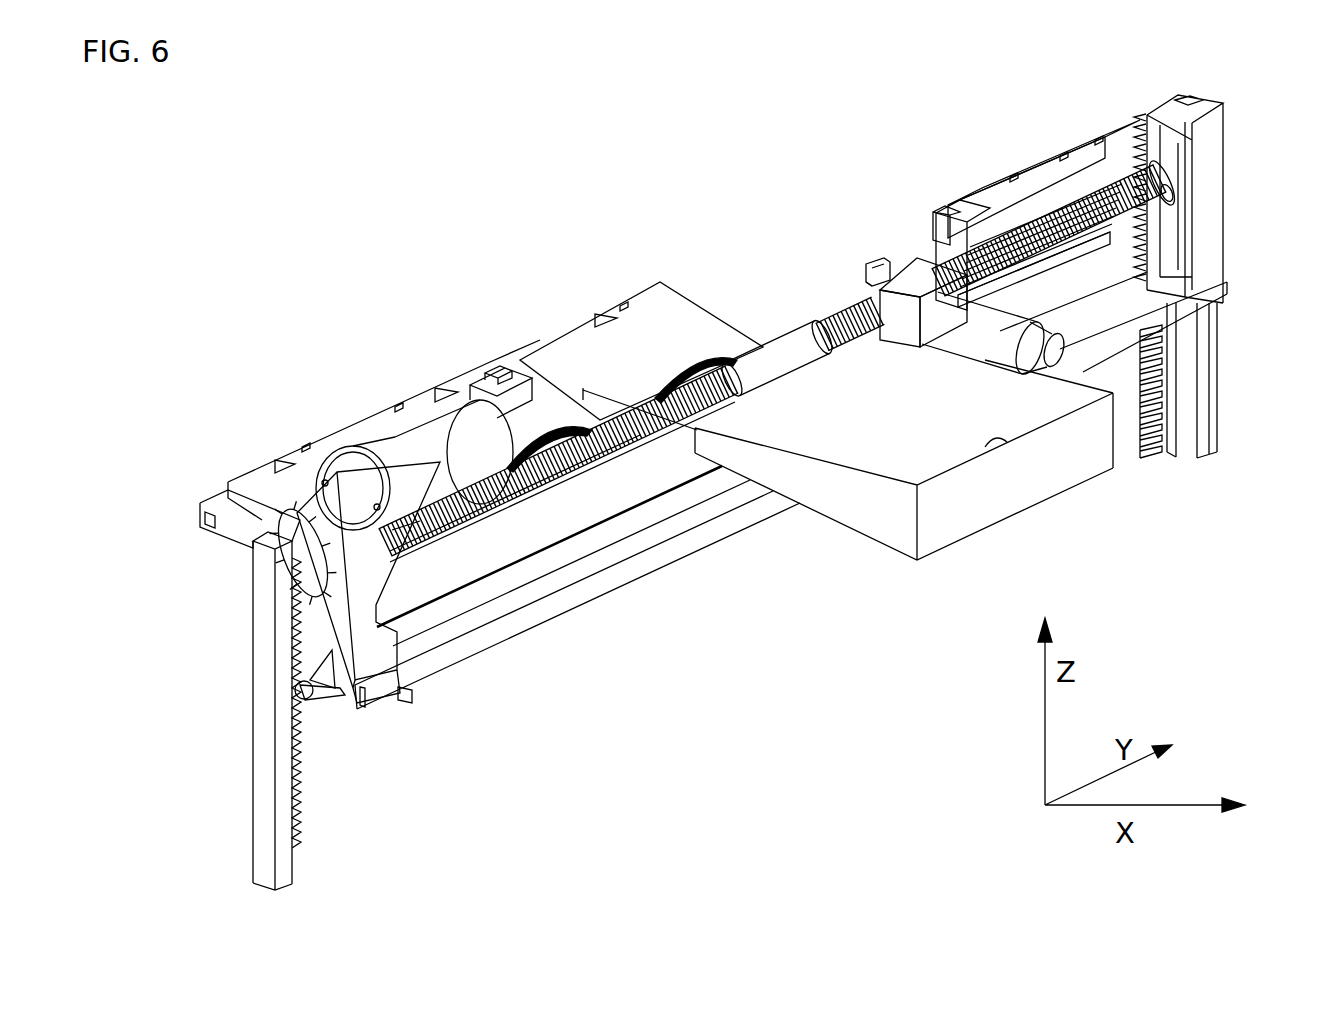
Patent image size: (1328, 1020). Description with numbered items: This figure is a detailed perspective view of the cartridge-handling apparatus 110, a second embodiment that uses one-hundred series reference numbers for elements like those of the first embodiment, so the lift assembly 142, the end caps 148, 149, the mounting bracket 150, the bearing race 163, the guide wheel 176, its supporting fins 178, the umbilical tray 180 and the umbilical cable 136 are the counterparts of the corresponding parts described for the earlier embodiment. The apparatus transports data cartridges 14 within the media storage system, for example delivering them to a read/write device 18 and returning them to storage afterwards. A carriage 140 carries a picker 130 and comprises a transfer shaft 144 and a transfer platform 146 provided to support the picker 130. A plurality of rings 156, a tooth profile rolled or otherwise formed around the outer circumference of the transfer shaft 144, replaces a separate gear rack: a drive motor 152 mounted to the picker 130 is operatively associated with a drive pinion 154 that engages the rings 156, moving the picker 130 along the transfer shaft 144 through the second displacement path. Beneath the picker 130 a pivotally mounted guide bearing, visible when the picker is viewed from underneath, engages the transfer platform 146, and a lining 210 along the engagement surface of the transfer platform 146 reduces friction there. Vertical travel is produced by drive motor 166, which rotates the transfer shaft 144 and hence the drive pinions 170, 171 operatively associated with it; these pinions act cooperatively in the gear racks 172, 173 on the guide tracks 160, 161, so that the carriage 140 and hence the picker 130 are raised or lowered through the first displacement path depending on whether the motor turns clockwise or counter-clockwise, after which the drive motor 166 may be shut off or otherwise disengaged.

The cartridge-handling apparatus 110 is at (494, 197).
The data cartridge 14 is at (583, 388).
The read/write device 18 is at (1062, 160).
The picker 130 is at (1007, 440).
The cylinder 136 is at (1040, 357).
The carriage 140 is at (712, 618).
The lift assembly 142 is at (220, 688).
The transfer shaft 144 is at (920, 247).
The transfer platform 146 is at (520, 645).
The rear wall 148 is at (255, 522).
The right post 149 is at (1228, 262).
The lead screw 150 is at (795, 355).
The drive motor 152 is at (953, 347).
The drive pinion 154 is at (890, 263).
The rings 156 is at (838, 320).
The guide track 160 is at (297, 878).
The guide track 161 is at (1227, 463).
The cross beam 163 is at (236, 503).
The drive motor 166 is at (423, 393).
The drive pinion 170 is at (310, 600).
The drive pinion 171 is at (1162, 205).
The gear rack 172 is at (302, 828).
The gear rack 173 is at (1155, 455).
The roller 176 is at (310, 700).
The lever 178 is at (302, 698).
The support slab 180 is at (1145, 322).
The lining 210 is at (400, 685).